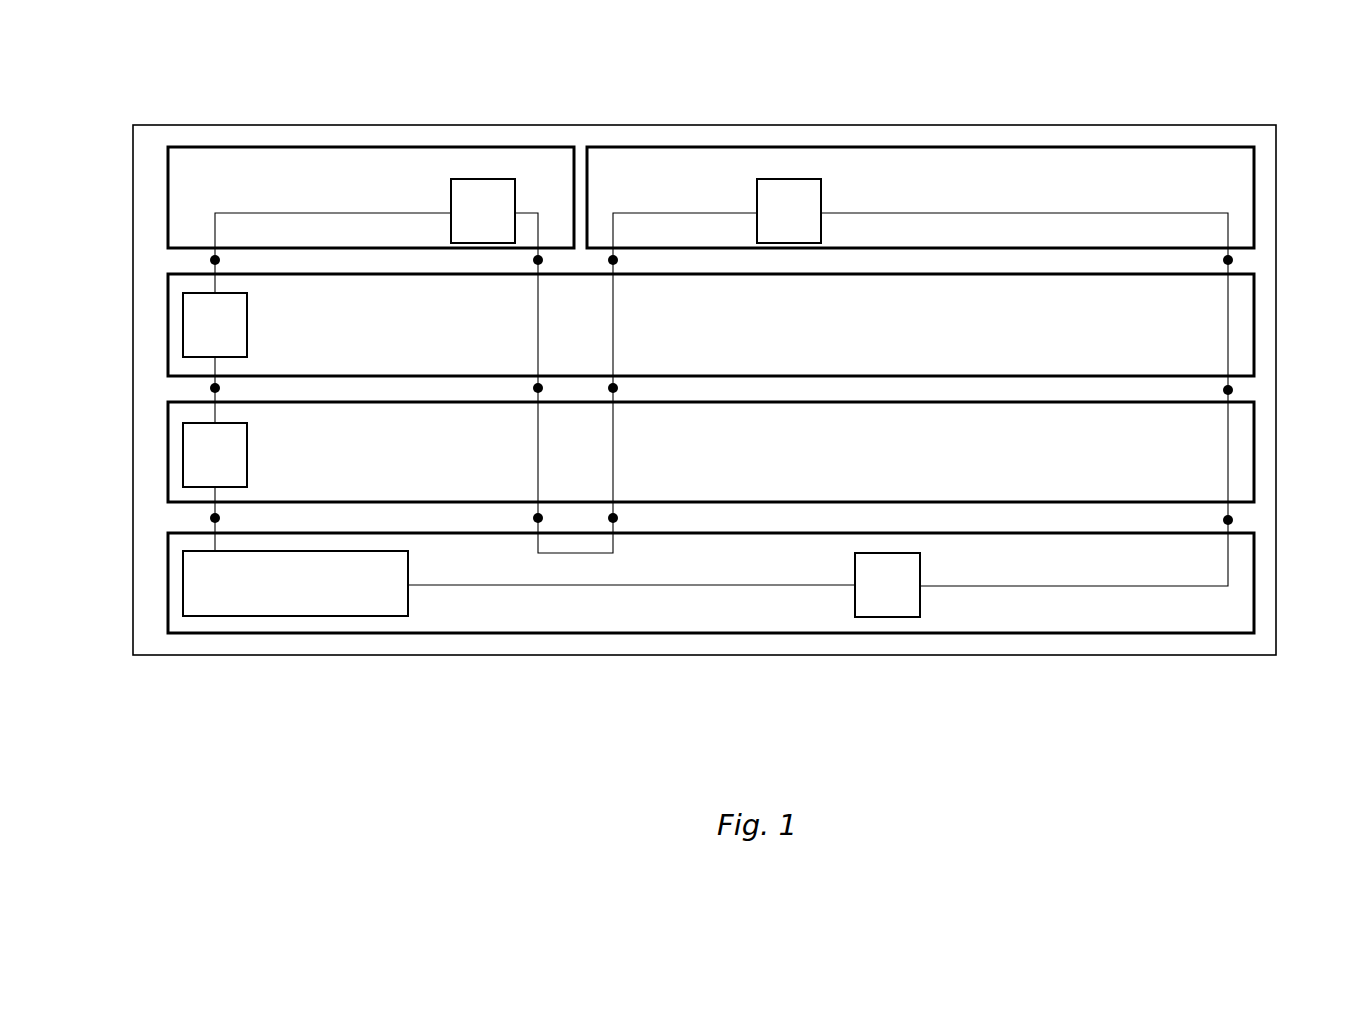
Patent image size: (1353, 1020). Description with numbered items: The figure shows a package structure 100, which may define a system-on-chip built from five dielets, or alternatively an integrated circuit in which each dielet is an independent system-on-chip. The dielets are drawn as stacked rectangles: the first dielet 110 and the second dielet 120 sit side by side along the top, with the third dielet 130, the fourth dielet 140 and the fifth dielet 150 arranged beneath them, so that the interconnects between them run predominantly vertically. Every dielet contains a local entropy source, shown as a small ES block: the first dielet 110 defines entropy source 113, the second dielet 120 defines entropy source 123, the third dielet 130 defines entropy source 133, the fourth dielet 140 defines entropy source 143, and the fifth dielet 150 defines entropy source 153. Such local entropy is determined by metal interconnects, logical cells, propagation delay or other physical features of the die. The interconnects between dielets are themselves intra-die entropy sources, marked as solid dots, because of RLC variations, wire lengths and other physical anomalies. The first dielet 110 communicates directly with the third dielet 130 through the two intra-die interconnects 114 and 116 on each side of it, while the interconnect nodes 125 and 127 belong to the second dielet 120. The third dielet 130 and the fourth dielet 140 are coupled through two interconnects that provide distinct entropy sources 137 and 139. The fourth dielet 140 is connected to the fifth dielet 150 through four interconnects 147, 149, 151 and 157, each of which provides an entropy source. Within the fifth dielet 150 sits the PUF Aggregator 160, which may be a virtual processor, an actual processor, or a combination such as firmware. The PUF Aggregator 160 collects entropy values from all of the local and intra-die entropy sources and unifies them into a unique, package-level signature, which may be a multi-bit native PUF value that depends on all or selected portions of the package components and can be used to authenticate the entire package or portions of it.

The structure 100 is at (1287, 148).
The dielet-1 110 is at (257, 146).
The entropy source 113 is at (484, 179).
The intra-die interconnect 114 is at (200, 260).
The intra-die interconnect 116 is at (538, 258).
The dielet-2 120 is at (888, 147).
The entropy source 123 is at (788, 181).
The intra-die interconnect 125 is at (613, 258).
The intra-die interconnect 127 is at (1228, 258).
The dielet-3 130 is at (711, 325).
The entropy source 133 is at (183, 328).
The entropy source 137 is at (1233, 388).
The entropy source 139 is at (215, 388).
The dielet-4 140 is at (711, 452).
The entropy source 143 is at (183, 456).
The interconnect 147 is at (1233, 518).
The interconnect 149 is at (638, 520).
The dielet-5 150 is at (711, 583).
The interconnect 151 is at (510, 520).
The entropy source 153 is at (890, 617).
The interconnect 157 is at (215, 518).
The PUF Aggregator 160 is at (293, 617).